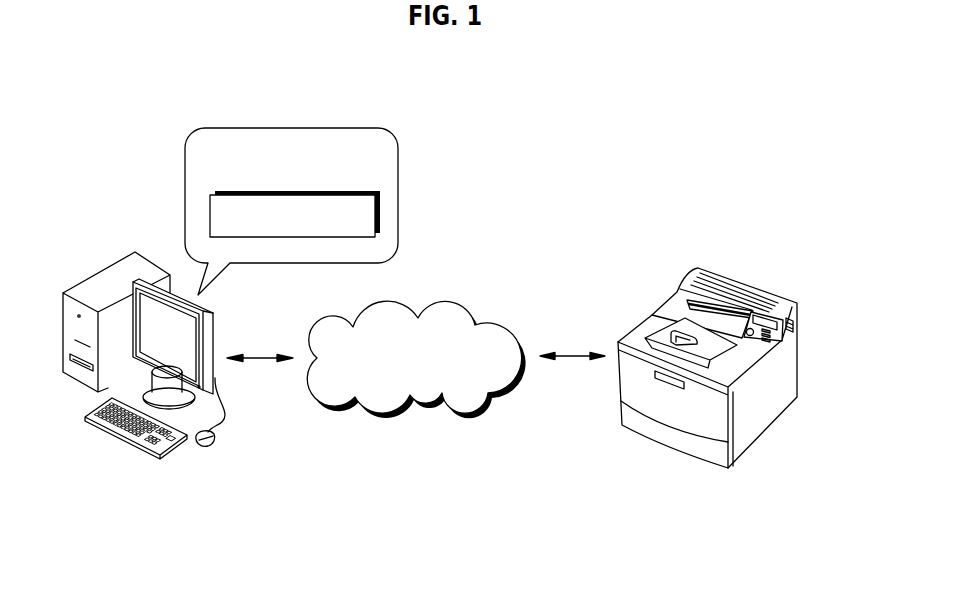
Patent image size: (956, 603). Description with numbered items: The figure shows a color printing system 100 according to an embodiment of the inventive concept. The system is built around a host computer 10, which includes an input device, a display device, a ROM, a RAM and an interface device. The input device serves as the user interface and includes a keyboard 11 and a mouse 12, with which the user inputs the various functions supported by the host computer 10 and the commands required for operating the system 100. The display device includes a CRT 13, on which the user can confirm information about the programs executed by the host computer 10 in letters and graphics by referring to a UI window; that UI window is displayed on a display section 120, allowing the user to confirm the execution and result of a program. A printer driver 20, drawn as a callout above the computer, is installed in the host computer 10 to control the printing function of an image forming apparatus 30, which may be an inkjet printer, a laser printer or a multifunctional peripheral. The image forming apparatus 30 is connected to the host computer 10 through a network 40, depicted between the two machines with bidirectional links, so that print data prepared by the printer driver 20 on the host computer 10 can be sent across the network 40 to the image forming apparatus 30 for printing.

The host computer 10 is at (118, 270).
The keyboard 11 is at (136, 440).
The mouse 12 is at (213, 446).
The CRT 13 is at (213, 316).
The printer driver 20 is at (299, 194).
The image forming apparatus 30 is at (733, 351).
The network 40 is at (441, 302).
The color printing system 100 is at (442, 471).
The display section 120 is at (768, 331).